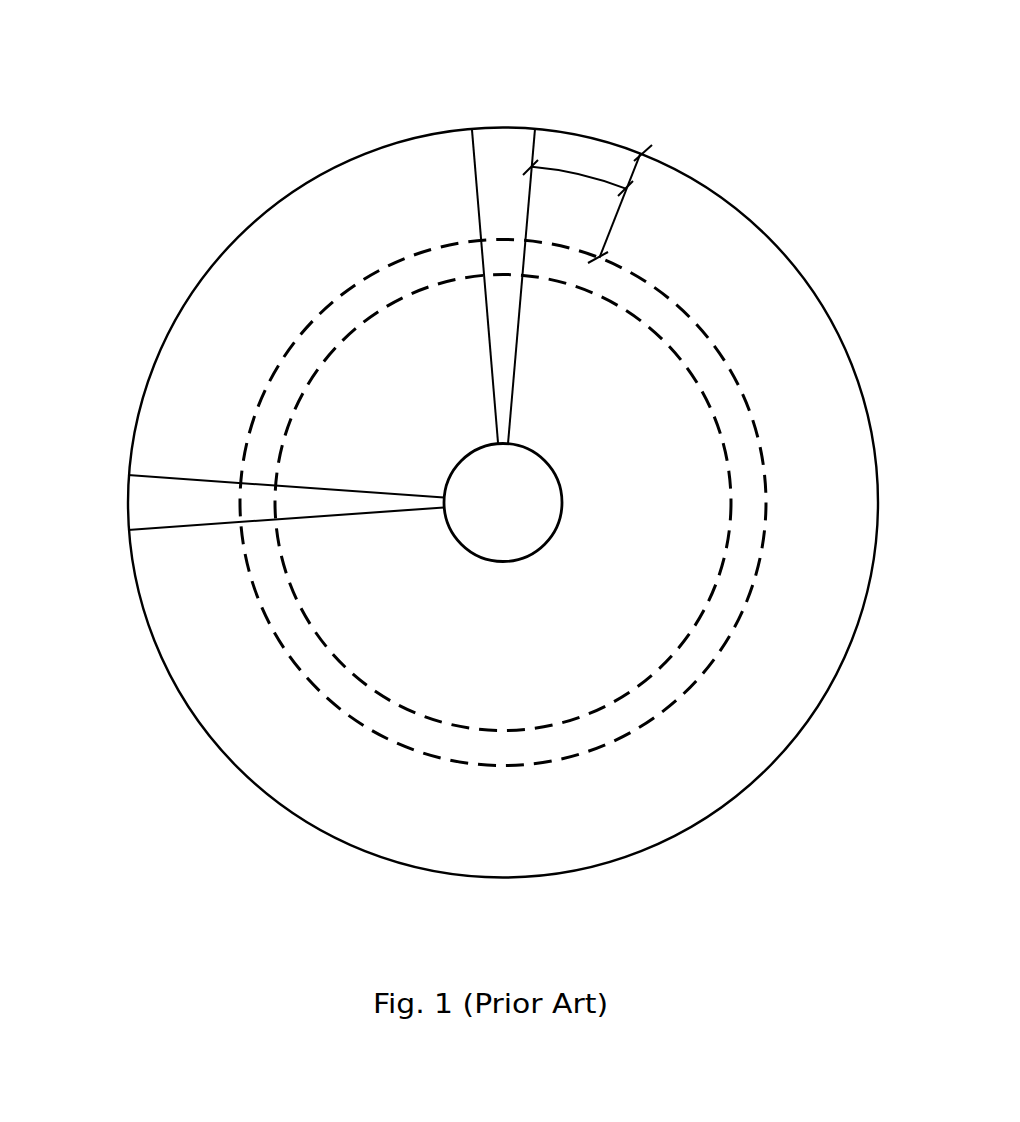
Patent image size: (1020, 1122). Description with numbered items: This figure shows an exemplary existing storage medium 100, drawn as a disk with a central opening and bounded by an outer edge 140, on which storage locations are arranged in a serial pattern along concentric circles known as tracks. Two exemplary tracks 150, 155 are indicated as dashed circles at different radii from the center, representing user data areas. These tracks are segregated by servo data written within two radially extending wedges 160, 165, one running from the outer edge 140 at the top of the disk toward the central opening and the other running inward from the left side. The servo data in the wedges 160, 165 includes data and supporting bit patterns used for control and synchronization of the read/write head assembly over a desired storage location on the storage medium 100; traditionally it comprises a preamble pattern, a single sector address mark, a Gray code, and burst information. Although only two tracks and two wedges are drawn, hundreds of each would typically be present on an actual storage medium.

The storage medium 100 is at (241, 117).
The disk outer edge 140 is at (715, 189).
The track 150 is at (672, 300).
The track 155 is at (686, 365).
The wedge 160 is at (507, 130).
The wedge 165 is at (130, 503).